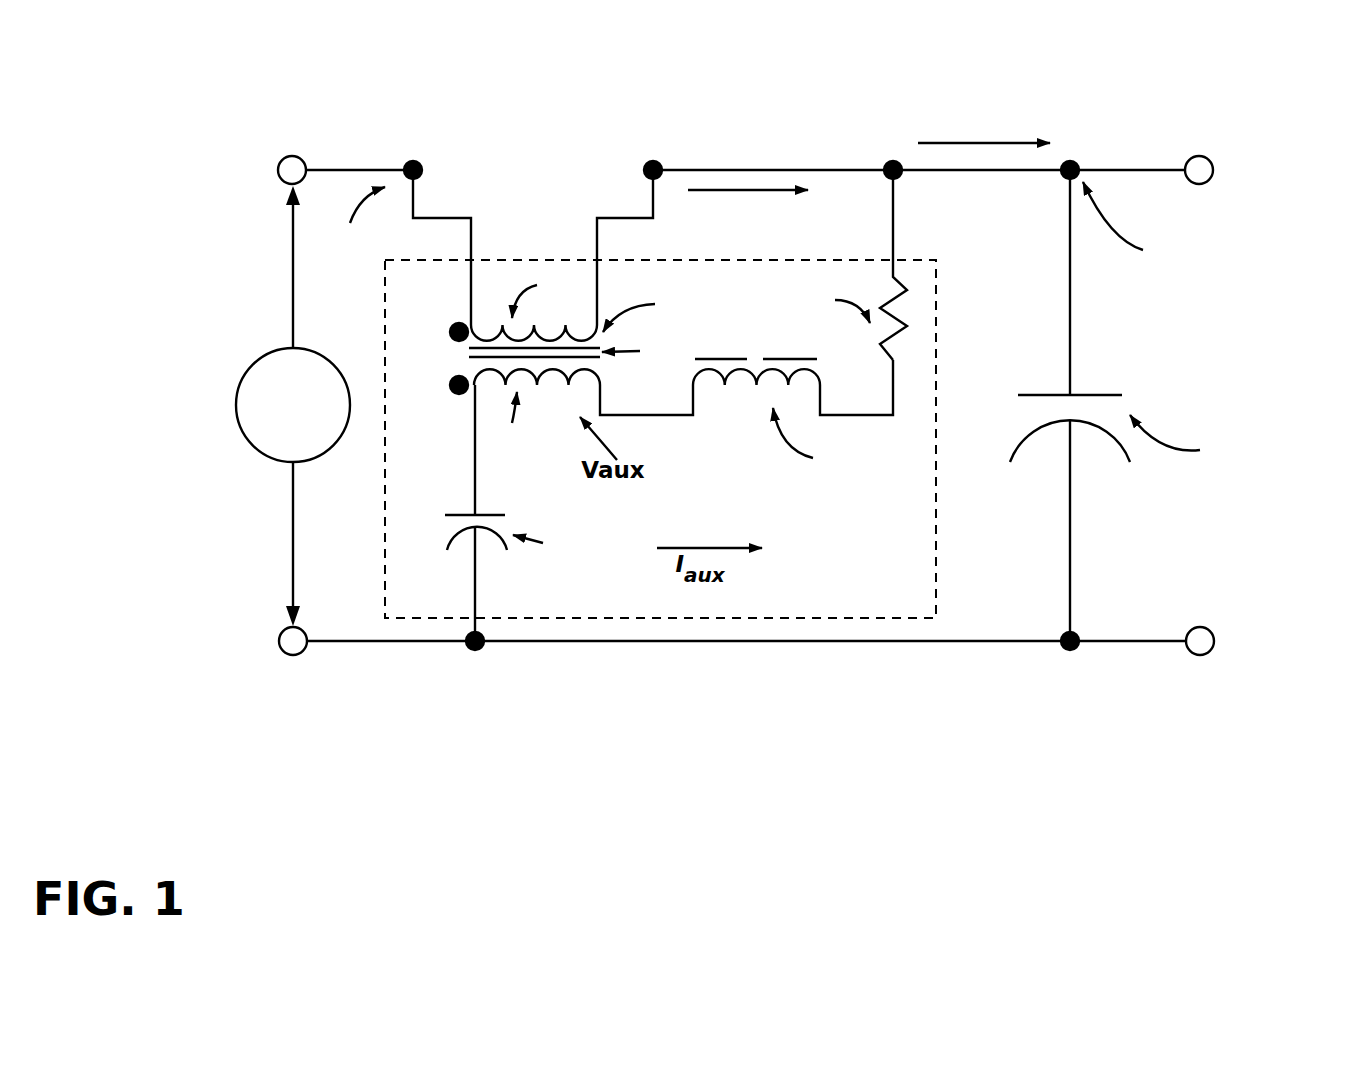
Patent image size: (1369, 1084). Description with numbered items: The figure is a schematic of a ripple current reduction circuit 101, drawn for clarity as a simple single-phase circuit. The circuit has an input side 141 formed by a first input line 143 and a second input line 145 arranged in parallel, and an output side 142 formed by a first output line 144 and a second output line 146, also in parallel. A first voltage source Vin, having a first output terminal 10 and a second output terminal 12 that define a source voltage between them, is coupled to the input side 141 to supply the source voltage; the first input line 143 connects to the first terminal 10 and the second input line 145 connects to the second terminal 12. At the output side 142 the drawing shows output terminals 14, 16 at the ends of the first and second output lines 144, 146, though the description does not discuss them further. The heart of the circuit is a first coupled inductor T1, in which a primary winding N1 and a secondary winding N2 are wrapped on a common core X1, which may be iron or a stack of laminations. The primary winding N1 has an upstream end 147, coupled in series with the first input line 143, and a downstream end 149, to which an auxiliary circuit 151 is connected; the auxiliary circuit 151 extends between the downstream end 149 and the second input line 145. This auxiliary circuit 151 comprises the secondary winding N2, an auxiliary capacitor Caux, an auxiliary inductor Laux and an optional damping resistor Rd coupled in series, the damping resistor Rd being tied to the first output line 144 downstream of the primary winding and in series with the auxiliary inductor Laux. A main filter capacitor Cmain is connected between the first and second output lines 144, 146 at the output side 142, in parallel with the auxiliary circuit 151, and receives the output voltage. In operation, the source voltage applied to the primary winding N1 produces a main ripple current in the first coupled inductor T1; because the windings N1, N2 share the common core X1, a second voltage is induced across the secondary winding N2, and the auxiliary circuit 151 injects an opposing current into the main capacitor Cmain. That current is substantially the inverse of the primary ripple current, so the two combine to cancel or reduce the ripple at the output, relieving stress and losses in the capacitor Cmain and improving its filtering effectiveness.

The first output terminal 10 is at (277, 169).
The second output terminal 12 is at (278, 637).
The first output terminal 14 is at (1213, 165).
The second output terminal 16 is at (1214, 638).
The ripple current reduction circuit 101 is at (450, 142).
The input side 141 is at (199, 406).
The output side 142 is at (1189, 405).
The first input line 143 is at (388, 168).
The first output line 144 is at (1145, 172).
The second input line 145 is at (365, 642).
The second output line 146 is at (1112, 643).
The upstream end 147 is at (437, 317).
The downstream end 149 is at (517, 303).
The auxiliary circuit 151 is at (942, 517).
The first coupled inductor T1 is at (517, 360).
The common core X1 is at (572, 350).
The primary winding N1 is at (534, 307).
The secondary winding N2 is at (525, 412).
The first voltage source Vin is at (173, 335).
The auxiliary capacitor Caux is at (527, 517).
The auxiliary inductor Laux is at (746, 416).
The damping resistor Rd is at (851, 265).
The main filter capacitor Cmain is at (1252, 323).